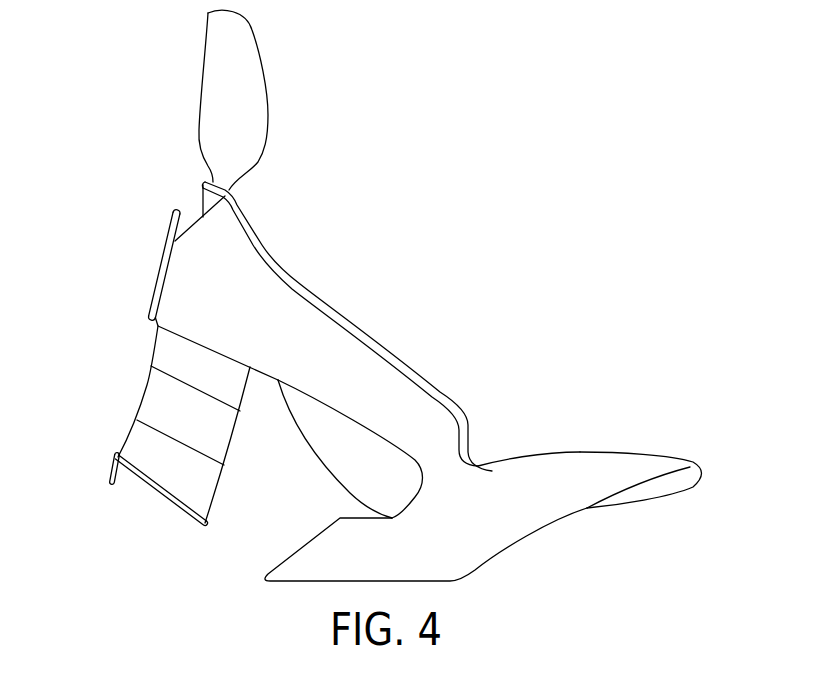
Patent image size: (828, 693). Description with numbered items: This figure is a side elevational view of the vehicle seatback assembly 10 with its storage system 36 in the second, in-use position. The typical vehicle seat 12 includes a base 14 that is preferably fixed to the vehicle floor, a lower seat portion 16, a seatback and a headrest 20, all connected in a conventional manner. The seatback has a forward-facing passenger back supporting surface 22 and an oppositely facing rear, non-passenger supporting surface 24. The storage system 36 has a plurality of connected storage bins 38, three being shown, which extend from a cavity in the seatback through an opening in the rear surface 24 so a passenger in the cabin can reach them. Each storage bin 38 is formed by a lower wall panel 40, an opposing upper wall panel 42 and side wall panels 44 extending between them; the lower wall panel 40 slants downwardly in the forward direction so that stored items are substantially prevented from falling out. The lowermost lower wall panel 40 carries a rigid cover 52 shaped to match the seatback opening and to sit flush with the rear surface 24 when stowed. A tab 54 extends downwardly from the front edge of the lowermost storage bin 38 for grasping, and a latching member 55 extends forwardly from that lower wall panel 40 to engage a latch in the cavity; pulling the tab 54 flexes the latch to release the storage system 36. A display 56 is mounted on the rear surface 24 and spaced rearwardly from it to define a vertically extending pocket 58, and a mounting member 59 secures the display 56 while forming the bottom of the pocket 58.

The vehicle seatback assembly 10 is at (397, 222).
The vehicle seat 12 is at (346, 305).
The base 14 is at (288, 548).
The lower seat portion 16 is at (613, 450).
The headrest 20 is at (263, 67).
The passenger back supporting surface 22 is at (412, 363).
The non-passenger supporting surface 24 is at (268, 375).
The storage system 36 is at (138, 380).
The storage bin 38 is at (143, 398).
The lower wall panel 40 is at (163, 433).
The upper wall panel 42 is at (183, 380).
The side wall panel 44 is at (153, 465).
The rigid cover 52 is at (172, 505).
The tab 54 is at (112, 483).
The latching member 55 is at (117, 456).
The display 56 is at (150, 282).
The pocket 58 is at (167, 255).
The mounting member 59 is at (157, 326).